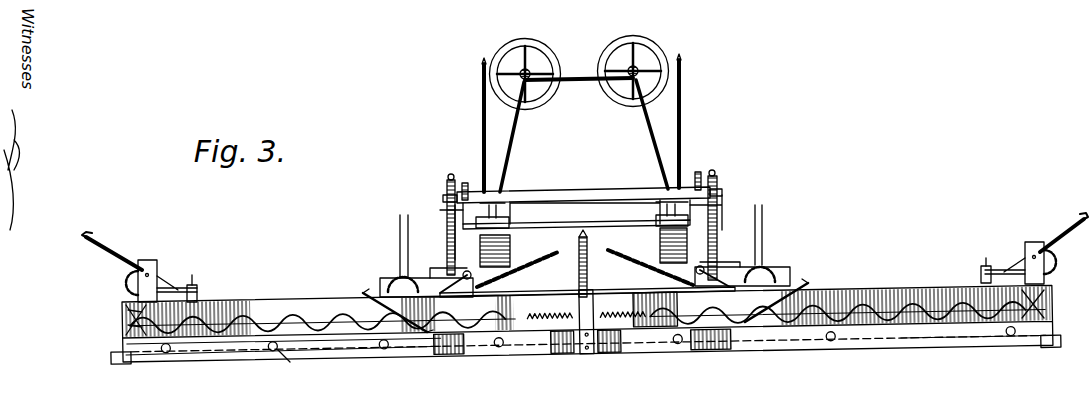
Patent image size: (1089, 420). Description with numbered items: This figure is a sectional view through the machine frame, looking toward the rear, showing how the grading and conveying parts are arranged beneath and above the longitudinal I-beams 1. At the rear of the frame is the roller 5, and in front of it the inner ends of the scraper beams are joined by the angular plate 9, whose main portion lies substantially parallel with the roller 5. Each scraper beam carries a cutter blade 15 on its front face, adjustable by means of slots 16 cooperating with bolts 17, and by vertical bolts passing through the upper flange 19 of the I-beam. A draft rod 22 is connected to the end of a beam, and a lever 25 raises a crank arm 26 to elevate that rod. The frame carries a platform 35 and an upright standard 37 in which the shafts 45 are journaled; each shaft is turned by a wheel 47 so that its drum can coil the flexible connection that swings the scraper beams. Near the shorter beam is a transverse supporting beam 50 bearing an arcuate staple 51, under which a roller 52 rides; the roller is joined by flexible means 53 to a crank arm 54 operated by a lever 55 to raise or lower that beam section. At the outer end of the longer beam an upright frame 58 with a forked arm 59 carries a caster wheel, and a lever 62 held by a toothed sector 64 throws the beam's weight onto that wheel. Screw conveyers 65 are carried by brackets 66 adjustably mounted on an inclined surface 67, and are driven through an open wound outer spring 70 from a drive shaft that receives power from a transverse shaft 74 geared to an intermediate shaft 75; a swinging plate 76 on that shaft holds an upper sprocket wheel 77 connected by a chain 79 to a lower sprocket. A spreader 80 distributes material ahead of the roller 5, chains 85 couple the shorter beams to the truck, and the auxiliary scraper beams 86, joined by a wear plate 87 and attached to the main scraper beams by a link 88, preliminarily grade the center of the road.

The I-beams 1 is at (500, 212).
The roller 5 is at (508, 250).
The angular plate 9 is at (553, 290).
The cutter blade 15 is at (125, 345).
The slots 16 is at (268, 358).
The bolts 17 is at (280, 352).
The upper flange 19 is at (128, 305).
The link rod 22 is at (215, 360).
The lever 25 is at (400, 250).
The crank arm 26 is at (110, 364).
The platform 35 is at (562, 192).
The upright standard 37 is at (514, 141).
The shafts 45 is at (531, 71).
The wheel 47 is at (505, 48).
The transverse supporting beam 50 is at (434, 270).
The arcuate staple 51 is at (395, 278).
The roller 52 is at (480, 294).
The flexible means 53 is at (712, 218).
The crank arm 54 is at (466, 183).
The lever 55 is at (481, 103).
The upright frame 58 is at (156, 263).
The forked arm 59 is at (195, 288).
The lever 62 is at (100, 246).
The sector 64 is at (128, 280).
The screws 65 is at (298, 310).
The brackets 66 is at (124, 318).
The inclined surface 67 is at (165, 286).
The open wound outer spring 70 is at (566, 318).
The shaft 74 is at (449, 177).
The intermediate shaft 75 is at (453, 222).
The swinging plate 76 is at (594, 244).
The upper sprocket wheel 77 is at (598, 190).
The chain 79 is at (590, 279).
The spreader 80 is at (515, 258).
The chains 85 is at (500, 271).
The scraper beams 86 is at (465, 356).
The wear plate 87 is at (586, 357).
The link 88 is at (380, 300).